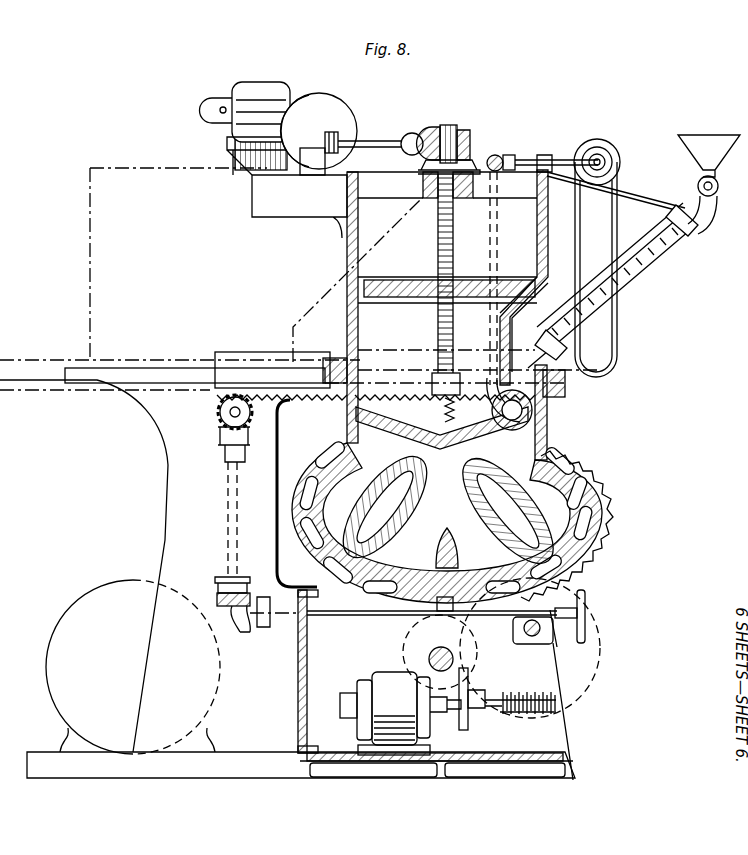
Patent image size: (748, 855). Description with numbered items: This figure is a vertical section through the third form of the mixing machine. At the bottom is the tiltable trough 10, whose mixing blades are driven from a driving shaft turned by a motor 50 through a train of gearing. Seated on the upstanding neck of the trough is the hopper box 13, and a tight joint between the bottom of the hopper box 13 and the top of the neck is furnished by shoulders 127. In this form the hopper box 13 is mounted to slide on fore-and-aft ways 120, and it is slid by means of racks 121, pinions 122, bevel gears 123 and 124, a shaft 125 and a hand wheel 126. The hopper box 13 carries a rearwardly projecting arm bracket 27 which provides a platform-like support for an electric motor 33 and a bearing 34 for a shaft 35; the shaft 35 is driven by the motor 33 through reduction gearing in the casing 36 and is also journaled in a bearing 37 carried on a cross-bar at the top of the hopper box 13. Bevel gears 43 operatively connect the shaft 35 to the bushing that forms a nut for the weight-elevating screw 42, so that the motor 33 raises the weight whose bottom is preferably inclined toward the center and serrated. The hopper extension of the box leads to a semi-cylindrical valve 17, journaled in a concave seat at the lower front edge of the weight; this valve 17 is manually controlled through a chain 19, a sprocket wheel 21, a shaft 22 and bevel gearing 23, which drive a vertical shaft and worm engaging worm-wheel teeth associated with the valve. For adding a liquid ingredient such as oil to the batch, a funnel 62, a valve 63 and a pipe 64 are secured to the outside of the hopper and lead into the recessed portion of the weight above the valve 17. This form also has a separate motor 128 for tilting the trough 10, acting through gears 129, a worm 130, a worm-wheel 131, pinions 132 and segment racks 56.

The electric motor 33 is at (275, 77).
The casing 36 is at (334, 104).
The bearing 34 is at (336, 140).
The shaft 35 is at (376, 140).
The bearing 37 is at (412, 133).
The bevel gears 43 is at (451, 125).
The weight-elevating screw 42 is at (437, 257).
The hopper box 13 is at (447, 315).
The arm bracket 27 is at (299, 206).
The bevel gearing 23 is at (495, 155).
The shaft 22 is at (544, 155).
The sprocket wheel 21 is at (604, 137).
The chain 19 is at (618, 312).
The pipe 64 is at (638, 270).
The funnel 62 is at (715, 152).
The valve 63 is at (696, 188).
The semi-cylindrical valve 17 is at (512, 431).
The shoulders 127 is at (332, 360).
The fore-and-aft ways 120 is at (70, 368).
The pinions 122 is at (217, 412).
The bevel gears 123 is at (218, 440).
The racks 121 is at (320, 414).
The trough 10 is at (560, 458).
The segment racks 56 is at (604, 550).
The hand wheel 126 is at (587, 606).
The motor 50 is at (133, 667).
The bevel gears 124 is at (243, 636).
The shaft 125 is at (367, 618).
The motor 128 is at (370, 688).
The gears 129 is at (468, 716).
The worm 130 is at (536, 716).
The pinions 132 is at (527, 645).
The worm-wheel 131 is at (578, 674).